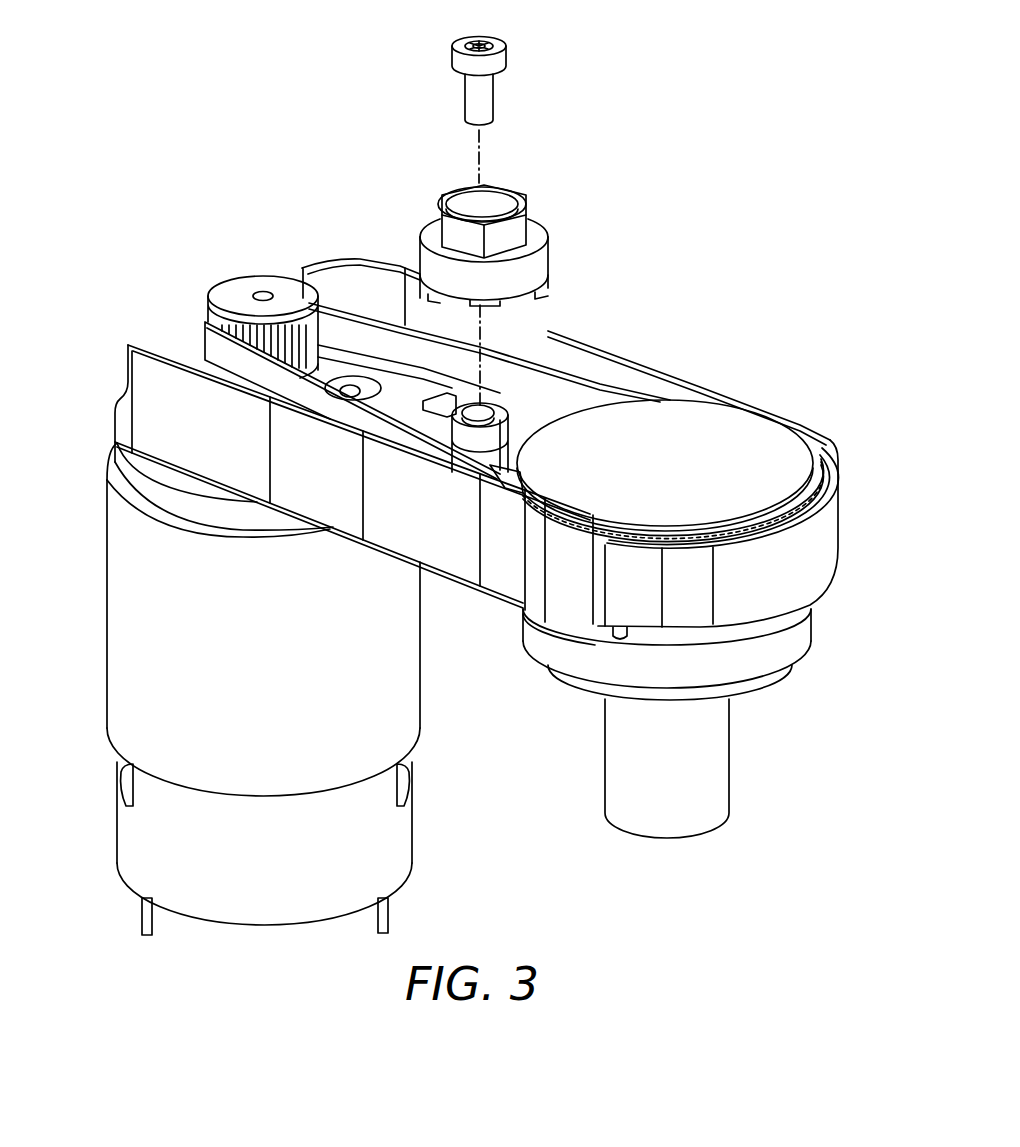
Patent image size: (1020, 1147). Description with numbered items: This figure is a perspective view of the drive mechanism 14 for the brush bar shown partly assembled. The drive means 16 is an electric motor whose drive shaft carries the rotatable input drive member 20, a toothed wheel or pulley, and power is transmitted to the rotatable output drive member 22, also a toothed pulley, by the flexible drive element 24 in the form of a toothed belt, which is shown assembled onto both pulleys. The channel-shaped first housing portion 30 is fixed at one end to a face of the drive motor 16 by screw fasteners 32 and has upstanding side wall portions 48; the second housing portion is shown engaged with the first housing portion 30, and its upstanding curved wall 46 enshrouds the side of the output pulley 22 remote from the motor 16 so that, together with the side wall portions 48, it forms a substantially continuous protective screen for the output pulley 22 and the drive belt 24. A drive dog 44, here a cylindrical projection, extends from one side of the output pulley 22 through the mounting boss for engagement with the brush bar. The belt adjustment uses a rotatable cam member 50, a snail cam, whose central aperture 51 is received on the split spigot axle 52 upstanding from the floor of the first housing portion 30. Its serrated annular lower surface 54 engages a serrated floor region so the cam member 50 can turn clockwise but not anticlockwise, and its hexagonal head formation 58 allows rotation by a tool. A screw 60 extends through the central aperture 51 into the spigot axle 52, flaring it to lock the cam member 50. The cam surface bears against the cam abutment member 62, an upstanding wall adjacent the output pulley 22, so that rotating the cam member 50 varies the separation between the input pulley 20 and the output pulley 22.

The drive mechanism 14 is at (734, 226).
The drive means 16 is at (106, 568).
The input drive member 20 is at (254, 280).
The output drive member 22 is at (750, 424).
The flexible drive element 24 is at (333, 323).
The first housing portion 30 is at (677, 373).
The screw fasteners 32 is at (357, 383).
The drive dog 44 is at (731, 749).
The upstanding curved wall 46 is at (832, 530).
The upstanding side wall portions 48 is at (603, 373).
The cam member 50 is at (543, 221).
The central aperture 51 is at (468, 216).
The split spigot axle 52 is at (468, 460).
The serrated annular lower surface 54 is at (537, 297).
The head formation 58 is at (510, 188).
The screw 60 is at (452, 60).
The cam abutment member 62 is at (492, 492).